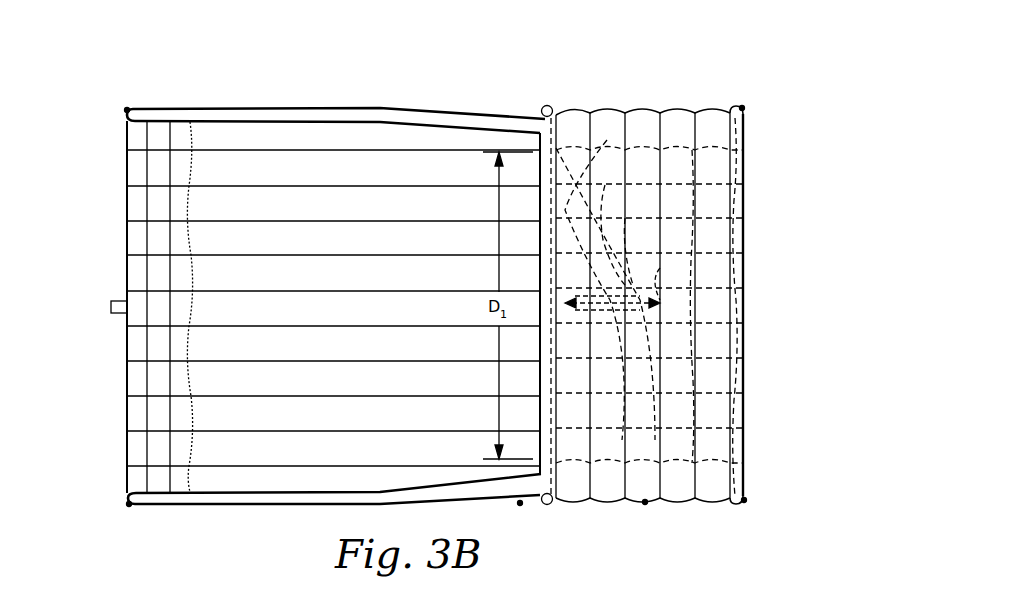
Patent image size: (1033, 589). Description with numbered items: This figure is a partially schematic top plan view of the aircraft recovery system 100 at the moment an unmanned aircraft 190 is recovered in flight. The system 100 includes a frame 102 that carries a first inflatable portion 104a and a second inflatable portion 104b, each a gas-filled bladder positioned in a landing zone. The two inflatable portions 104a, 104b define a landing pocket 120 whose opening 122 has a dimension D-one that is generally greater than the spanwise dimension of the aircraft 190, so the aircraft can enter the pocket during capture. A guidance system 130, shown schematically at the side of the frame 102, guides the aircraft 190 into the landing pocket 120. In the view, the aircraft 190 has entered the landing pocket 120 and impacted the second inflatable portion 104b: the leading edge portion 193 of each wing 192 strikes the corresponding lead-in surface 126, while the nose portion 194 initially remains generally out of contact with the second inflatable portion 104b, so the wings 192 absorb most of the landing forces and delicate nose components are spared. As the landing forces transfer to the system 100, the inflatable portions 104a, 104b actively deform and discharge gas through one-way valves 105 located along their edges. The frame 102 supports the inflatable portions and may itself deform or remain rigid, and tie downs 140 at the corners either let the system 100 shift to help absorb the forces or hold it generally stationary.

The aircraft recovery system 100 is at (708, 46).
The frame 102 is at (545, 140).
The first inflatable portion 104a is at (245, 130).
The second inflatable portion 104b is at (643, 118).
The one-way valve 105 is at (520, 503).
The landing pocket 120 is at (632, 268).
The opening 122 is at (557, 200).
The lead-in surface 126 is at (660, 268).
The guidance system 130 is at (110, 311).
The tie down 140 is at (127, 110).
The unmanned aircraft 190 is at (603, 152).
The wing 192 is at (606, 184).
The leading edge portion 193 is at (626, 218).
The nose portion 194 is at (660, 320).